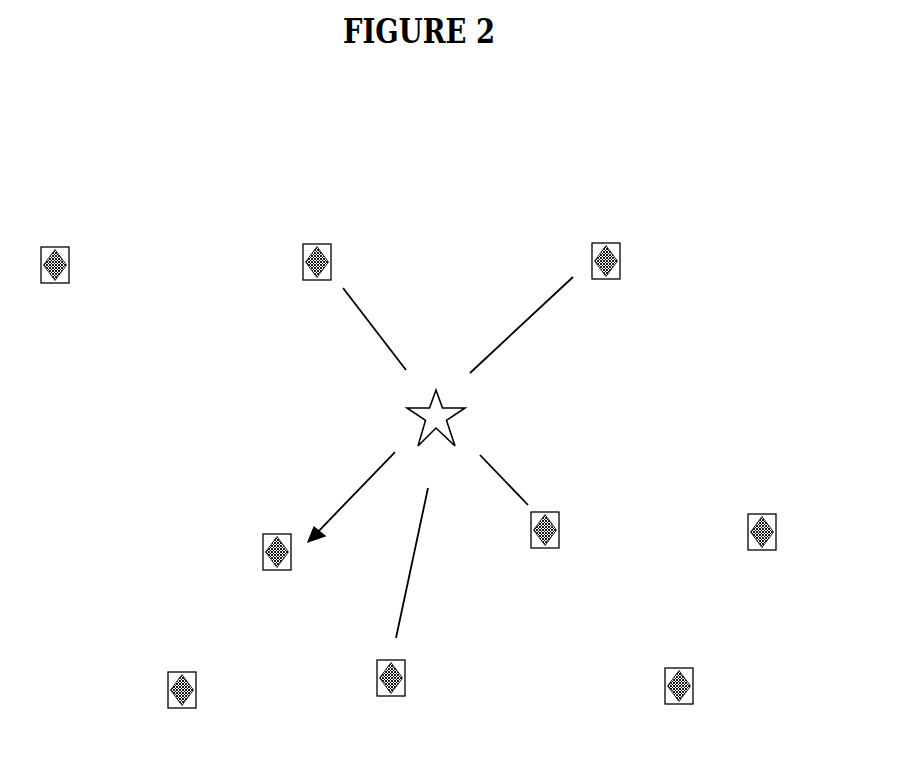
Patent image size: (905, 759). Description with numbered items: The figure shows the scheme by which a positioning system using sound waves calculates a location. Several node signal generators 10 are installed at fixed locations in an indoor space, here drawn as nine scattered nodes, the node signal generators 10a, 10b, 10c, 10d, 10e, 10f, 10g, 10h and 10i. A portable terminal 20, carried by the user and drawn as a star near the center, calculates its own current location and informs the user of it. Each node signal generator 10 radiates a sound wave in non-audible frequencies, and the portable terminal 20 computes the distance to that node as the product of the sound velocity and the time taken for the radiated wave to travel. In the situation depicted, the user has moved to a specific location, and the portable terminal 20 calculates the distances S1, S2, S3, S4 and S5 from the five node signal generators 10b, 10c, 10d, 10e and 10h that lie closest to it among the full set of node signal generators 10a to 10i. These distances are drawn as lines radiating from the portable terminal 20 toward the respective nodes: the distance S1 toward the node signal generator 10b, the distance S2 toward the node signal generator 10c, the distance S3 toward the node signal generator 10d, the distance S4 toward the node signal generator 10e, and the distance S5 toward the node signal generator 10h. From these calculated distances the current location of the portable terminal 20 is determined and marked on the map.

The node signal generator 10 is at (787, 184).
The node signal generator 10a is at (58, 250).
The node signal generator 10b is at (317, 248).
The node signal generator 10c is at (607, 275).
The node signal generator 10d is at (278, 568).
The node signal generator 10e is at (551, 552).
The node signal generator 10f is at (760, 517).
The node signal generator 10g is at (187, 674).
The node signal generator 10h is at (394, 693).
The node signal generator 10i is at (677, 671).
The portable terminal 20 is at (467, 420).
The distance S1 is at (374, 329).
The distance S2 is at (521, 325).
The distance S3 is at (351, 497).
The distance S4 is at (506, 480).
The distance S5 is at (416, 563).